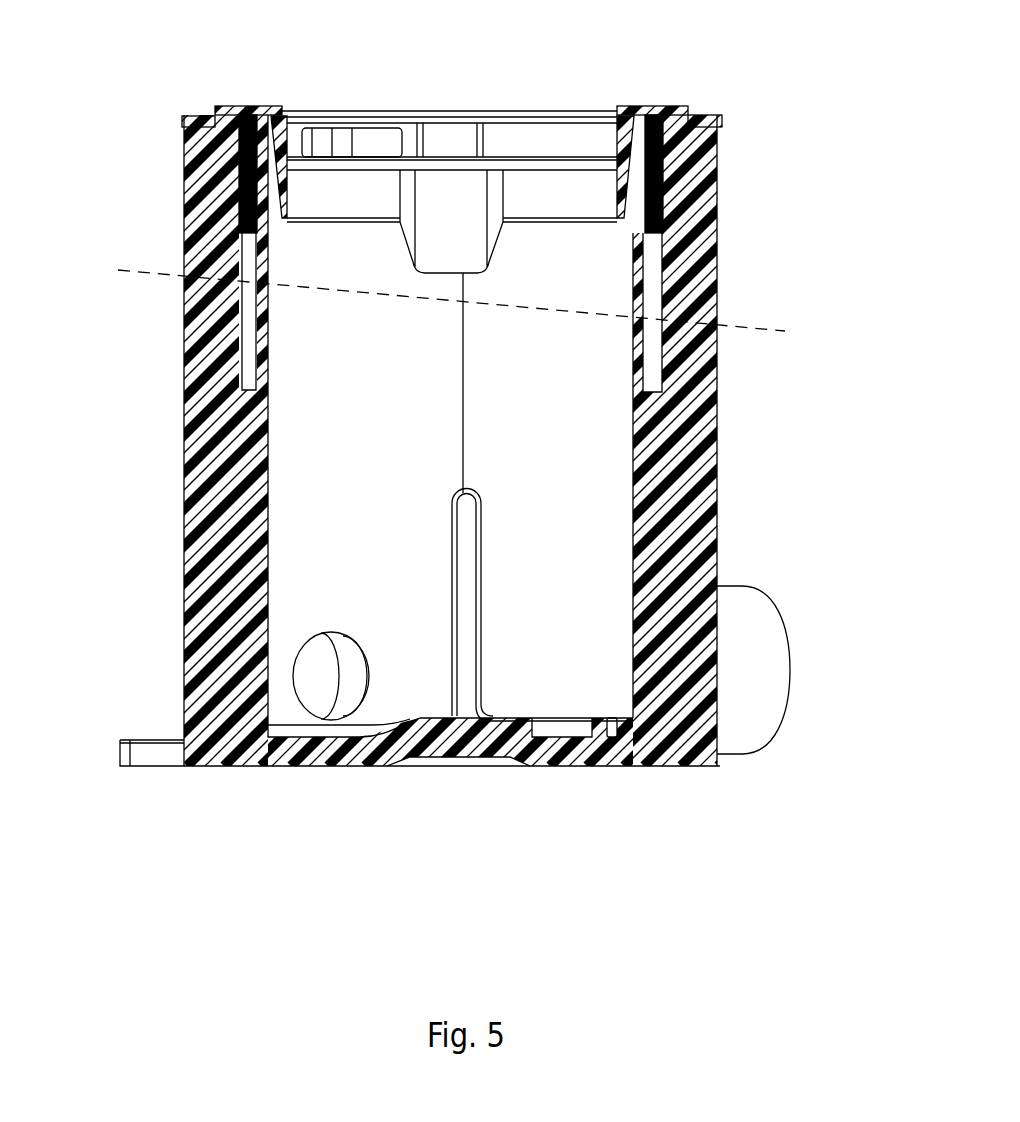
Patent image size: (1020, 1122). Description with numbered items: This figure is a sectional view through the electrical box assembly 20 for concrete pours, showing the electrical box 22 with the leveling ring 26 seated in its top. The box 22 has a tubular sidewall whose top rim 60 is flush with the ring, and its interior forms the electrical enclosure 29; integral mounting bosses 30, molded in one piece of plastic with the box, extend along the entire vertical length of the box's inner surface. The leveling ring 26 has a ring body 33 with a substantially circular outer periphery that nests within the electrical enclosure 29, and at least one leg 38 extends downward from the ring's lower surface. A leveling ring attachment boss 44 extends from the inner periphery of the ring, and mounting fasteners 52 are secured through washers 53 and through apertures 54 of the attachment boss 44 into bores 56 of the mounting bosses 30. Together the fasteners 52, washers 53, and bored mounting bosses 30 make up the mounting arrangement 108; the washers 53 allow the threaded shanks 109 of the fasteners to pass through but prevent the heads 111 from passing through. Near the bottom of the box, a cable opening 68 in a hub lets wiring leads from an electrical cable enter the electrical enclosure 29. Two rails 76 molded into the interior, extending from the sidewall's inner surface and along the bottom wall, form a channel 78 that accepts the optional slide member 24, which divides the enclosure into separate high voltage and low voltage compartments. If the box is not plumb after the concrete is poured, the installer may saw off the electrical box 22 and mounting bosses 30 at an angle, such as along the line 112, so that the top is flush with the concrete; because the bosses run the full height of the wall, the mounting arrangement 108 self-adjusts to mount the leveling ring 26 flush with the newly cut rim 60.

The electrical box assembly 20 is at (93, 405).
The electrical box 22 is at (718, 444).
The slide member 24 is at (566, 505).
The leveling ring 26 is at (448, 111).
The electrical enclosure 29 is at (393, 391).
The mounting bosses 30 is at (268, 348).
The ring body 33 is at (287, 185).
The leg 38 is at (466, 256).
The leveling ring attachment boss 44 is at (678, 153).
The mounting fasteners 52 is at (653, 106).
The washers 53 is at (688, 107).
The apertures 54 is at (260, 116).
The bores 56 is at (648, 290).
The top rim 60 is at (186, 121).
The cable opening 68 is at (312, 660).
The rails 76 is at (458, 555).
The channel 78 is at (468, 492).
The mounting arrangement 108 is at (775, 86).
The threaded shanks 109 is at (664, 216).
The heads 111 is at (242, 106).
The line 112 is at (762, 326).